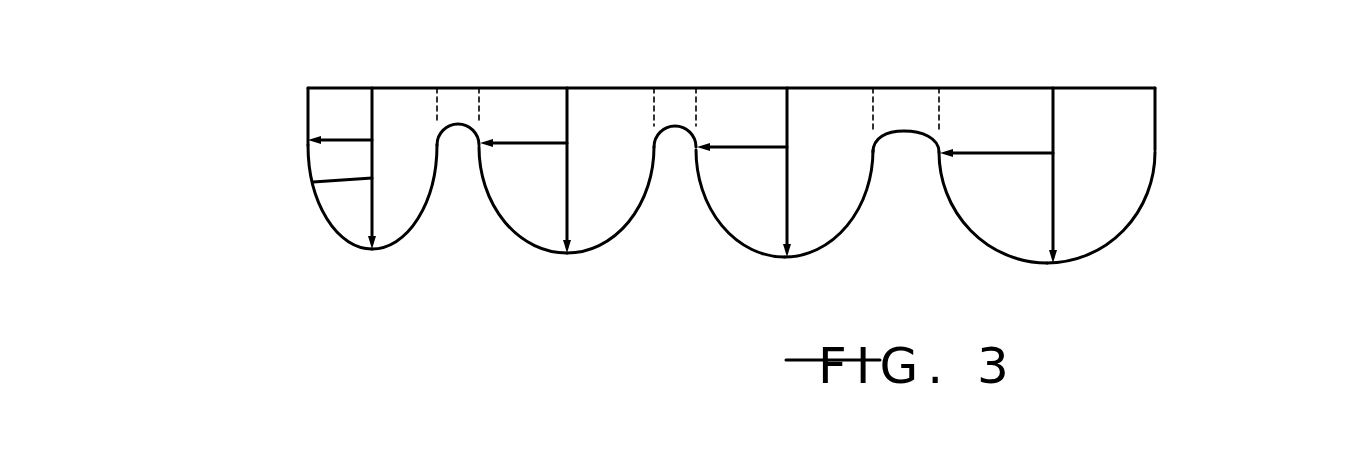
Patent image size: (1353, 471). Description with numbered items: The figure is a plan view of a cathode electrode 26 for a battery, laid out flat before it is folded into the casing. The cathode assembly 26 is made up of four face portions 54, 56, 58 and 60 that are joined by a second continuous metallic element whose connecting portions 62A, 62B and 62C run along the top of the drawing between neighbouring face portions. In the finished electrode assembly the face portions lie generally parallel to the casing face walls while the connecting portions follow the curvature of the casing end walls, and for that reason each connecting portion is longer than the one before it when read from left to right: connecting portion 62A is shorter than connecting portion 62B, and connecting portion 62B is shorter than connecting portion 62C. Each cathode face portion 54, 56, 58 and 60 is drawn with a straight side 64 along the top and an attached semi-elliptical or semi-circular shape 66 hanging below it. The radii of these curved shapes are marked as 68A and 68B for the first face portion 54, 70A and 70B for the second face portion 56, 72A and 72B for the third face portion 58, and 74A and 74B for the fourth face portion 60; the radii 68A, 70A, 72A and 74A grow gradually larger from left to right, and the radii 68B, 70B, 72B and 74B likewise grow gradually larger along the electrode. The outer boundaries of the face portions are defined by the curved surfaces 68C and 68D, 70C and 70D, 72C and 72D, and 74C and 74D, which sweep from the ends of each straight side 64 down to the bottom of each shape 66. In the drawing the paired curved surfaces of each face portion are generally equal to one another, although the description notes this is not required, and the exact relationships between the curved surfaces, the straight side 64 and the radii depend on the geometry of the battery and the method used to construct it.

The cathode electrode 26 is at (1200, 98).
The first cathode face portion 54 is at (318, 159).
The second cathode face portion 56 is at (545, 175).
The third cathode face portion 58 is at (762, 159).
The fourth cathode face portion 60 is at (1019, 156).
The first connecting portion 62A is at (458, 110).
The second connecting portion 62B is at (677, 110).
The third connecting portion 62C is at (907, 123).
The straight side 64 is at (306, 97).
The semi-elliptical or semi-circular shape 66 is at (326, 250).
The first radius of first face portion 68A is at (357, 141).
The second radius of first face portion 68B is at (313, 182).
The curved surface of first face portion 68C is at (320, 215).
The curved surface of first face portion 68D is at (372, 250).
The first radius of second face portion 70A is at (523, 148).
The second radius of second face portion 70B is at (523, 245).
The curved surface of second face portion 70C is at (510, 233).
The curved surface of second face portion 70D is at (613, 238).
The first radius of third face portion 72A is at (750, 150).
The second radius of third face portion 72B is at (782, 197).
The curved surface of third face portion 72C is at (730, 237).
The curved surface of third face portion 72D is at (827, 258).
The first radius of fourth face portion 74A is at (993, 157).
The second radius of fourth face portion 74B is at (1047, 218).
The curved surface of fourth face portion 74C is at (977, 242).
The curved surface of fourth face portion 74D is at (1112, 243).